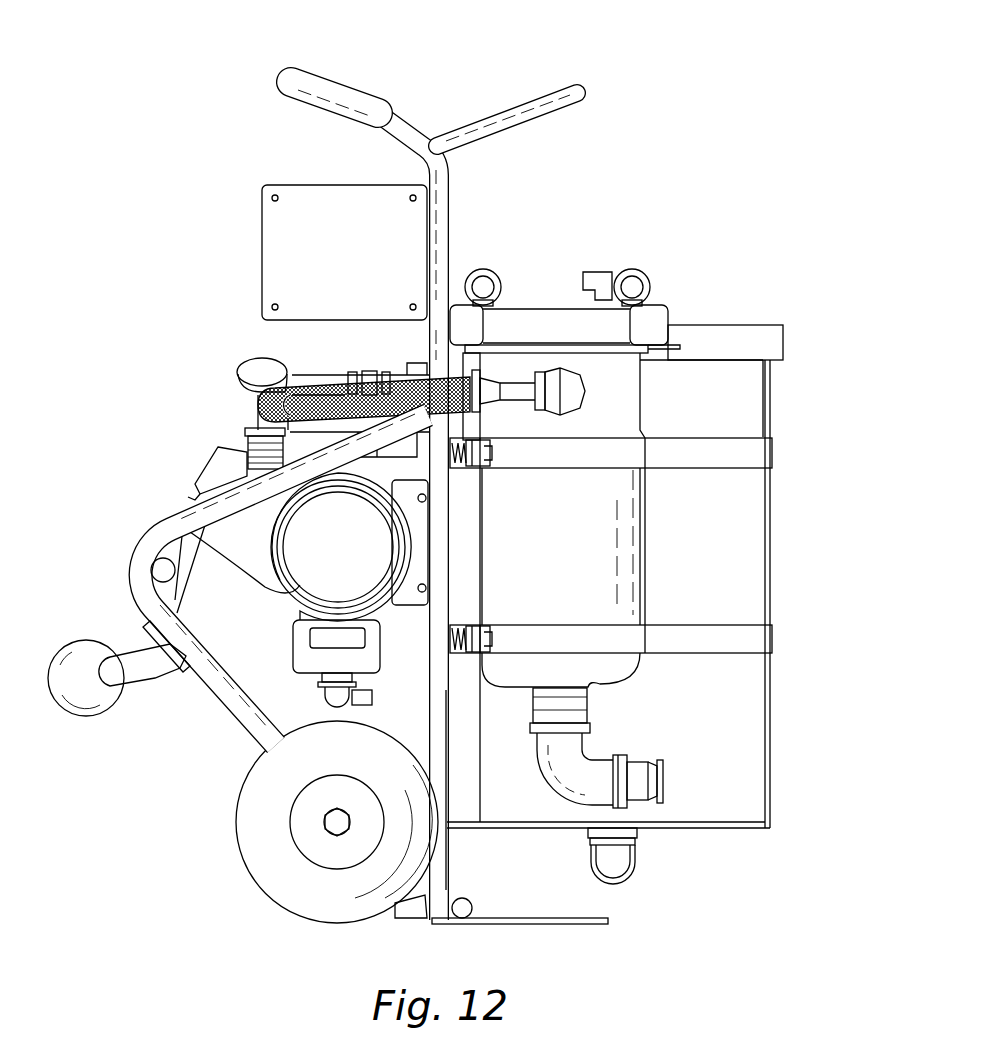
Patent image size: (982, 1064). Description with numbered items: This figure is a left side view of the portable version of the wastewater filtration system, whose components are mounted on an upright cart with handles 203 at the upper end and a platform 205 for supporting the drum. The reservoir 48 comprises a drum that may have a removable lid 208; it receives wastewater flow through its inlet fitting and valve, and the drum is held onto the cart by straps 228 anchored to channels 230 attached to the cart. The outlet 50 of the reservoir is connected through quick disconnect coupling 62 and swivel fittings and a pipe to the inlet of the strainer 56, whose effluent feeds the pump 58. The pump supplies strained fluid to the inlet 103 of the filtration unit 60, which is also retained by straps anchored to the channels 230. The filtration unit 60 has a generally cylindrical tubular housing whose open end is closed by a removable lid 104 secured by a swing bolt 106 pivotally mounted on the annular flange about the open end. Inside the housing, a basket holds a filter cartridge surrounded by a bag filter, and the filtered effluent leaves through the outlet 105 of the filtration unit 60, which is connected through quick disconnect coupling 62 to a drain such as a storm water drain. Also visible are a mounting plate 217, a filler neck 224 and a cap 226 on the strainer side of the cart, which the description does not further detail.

The handles 203 is at (333, 87).
The control panel plate 217 is at (335, 197).
The removable lid 104 is at (537, 306).
The removable lid 208 is at (730, 325).
The inlet 103 is at (565, 395).
The straps 228 is at (745, 453).
The channels 230 is at (466, 468).
The filtration unit 60 is at (648, 527).
The reservoir 48 is at (770, 758).
The outlet 105 is at (595, 688).
The quick disconnect coupling 62 is at (645, 795).
The quick disconnect coupling 50 is at (633, 845).
The platform 205 is at (580, 924).
The swing bolt 106 is at (72, 706).
The strainer 56 is at (293, 648).
The pump 58 is at (182, 528).
The filler neck 224 is at (258, 449).
The filler cap 226 is at (313, 382).